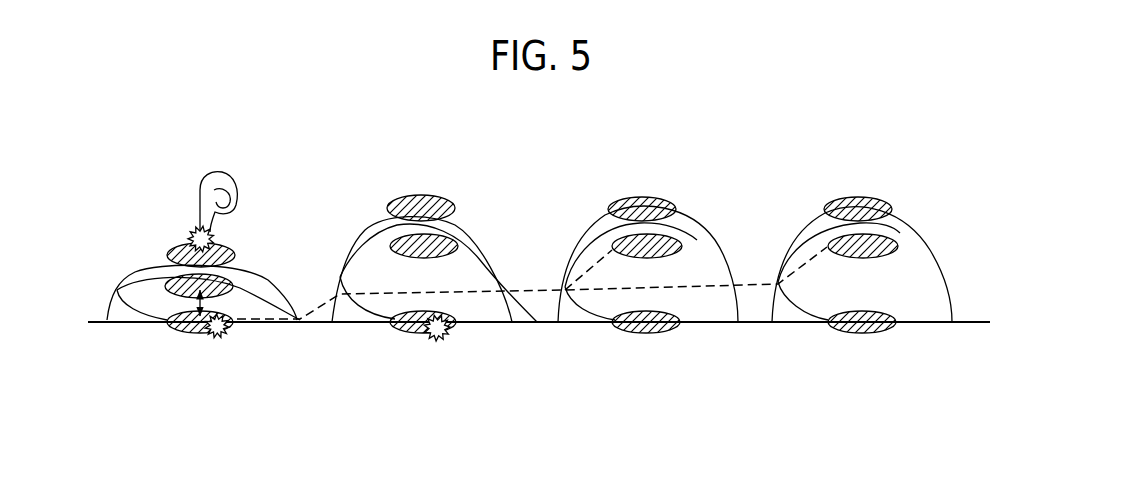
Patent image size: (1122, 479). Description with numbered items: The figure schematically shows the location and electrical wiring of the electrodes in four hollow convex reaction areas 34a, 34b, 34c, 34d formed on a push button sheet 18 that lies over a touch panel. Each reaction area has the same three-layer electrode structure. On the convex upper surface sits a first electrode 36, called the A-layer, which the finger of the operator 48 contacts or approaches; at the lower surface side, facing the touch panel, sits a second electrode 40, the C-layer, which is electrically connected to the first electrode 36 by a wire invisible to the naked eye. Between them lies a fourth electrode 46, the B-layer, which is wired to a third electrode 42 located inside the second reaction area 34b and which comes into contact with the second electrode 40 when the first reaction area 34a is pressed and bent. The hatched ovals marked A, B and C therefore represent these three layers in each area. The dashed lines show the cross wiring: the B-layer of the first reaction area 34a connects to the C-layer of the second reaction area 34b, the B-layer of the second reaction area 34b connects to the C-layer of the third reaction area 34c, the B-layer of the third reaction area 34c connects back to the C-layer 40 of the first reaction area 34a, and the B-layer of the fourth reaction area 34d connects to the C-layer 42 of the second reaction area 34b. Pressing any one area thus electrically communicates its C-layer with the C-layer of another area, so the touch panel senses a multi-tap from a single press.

The push button sheet 18 is at (766, 386).
The first reaction area 34a is at (258, 238).
The second reaction area 34b is at (494, 228).
The third reaction area 34c is at (732, 229).
The fourth reaction area 34d is at (941, 229).
The first electrode 36 is at (180, 244).
The fourth electrode 46 is at (178, 283).
The second electrode 40 is at (176, 333).
The third electrode 42 is at (412, 337).
The finger / touch 48 is at (191, 177).
The A-layer A is at (404, 196).
The B-layer B is at (456, 240).
The C-layer C is at (643, 333).